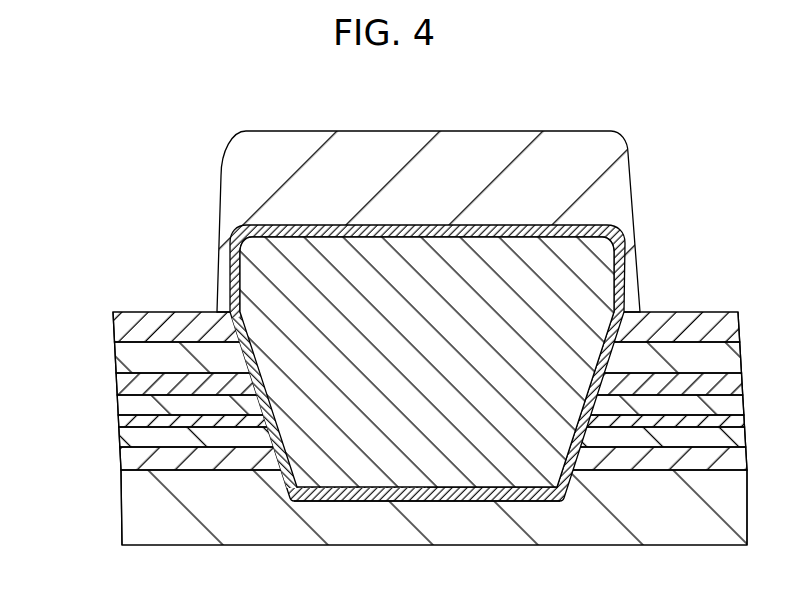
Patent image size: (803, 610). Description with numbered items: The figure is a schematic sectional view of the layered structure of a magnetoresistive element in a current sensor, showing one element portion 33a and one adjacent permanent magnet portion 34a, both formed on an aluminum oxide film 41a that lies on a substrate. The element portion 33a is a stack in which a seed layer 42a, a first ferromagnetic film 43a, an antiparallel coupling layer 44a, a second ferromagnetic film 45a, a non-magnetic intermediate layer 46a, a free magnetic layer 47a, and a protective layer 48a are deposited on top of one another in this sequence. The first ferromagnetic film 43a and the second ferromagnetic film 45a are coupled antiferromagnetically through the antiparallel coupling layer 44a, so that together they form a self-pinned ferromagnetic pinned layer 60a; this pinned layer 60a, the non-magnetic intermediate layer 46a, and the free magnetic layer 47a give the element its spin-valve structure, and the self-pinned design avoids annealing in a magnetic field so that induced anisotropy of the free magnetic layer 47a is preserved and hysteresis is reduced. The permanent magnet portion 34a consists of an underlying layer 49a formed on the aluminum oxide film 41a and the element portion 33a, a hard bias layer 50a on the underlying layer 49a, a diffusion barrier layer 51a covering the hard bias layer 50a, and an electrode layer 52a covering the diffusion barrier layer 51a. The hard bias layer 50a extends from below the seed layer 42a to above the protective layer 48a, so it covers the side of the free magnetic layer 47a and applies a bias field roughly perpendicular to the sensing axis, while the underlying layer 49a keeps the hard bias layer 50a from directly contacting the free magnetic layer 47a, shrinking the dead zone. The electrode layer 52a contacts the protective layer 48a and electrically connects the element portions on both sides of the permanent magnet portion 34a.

The element portion 33a is at (158, 290).
The permanent magnet portion 34a is at (457, 282).
The aluminum oxide film 41a is at (120, 505).
The seed layer 42a is at (119, 460).
The first ferromagnetic film 43a is at (118, 438).
The antiparallel coupling layer 44a is at (118, 422).
The second ferromagnetic film 45a is at (117, 405).
The non-magnetic intermediate layer 46a is at (116, 383).
The free magnetic layer 47a is at (115, 355).
The protective layer 48a is at (114, 322).
The underlying layer 49a is at (350, 503).
The hard bias layer 50a is at (598, 268).
The diffusion barrier layer 51a is at (614, 232).
The electrode layer 52a is at (623, 177).
The ferromagnetic pinned layer 60a is at (374, 425).